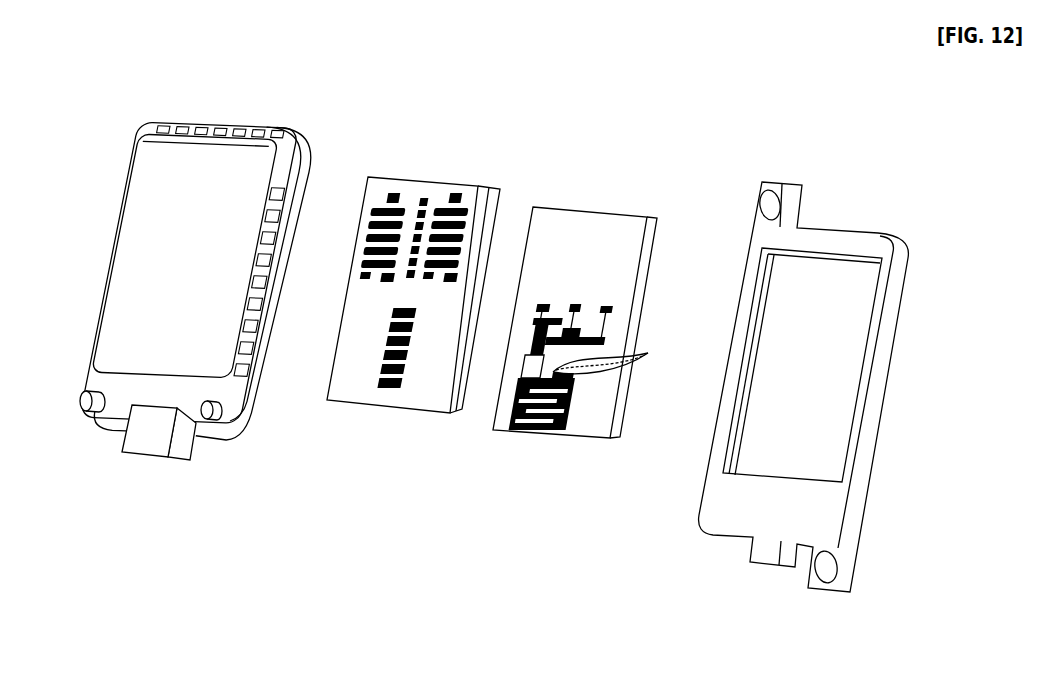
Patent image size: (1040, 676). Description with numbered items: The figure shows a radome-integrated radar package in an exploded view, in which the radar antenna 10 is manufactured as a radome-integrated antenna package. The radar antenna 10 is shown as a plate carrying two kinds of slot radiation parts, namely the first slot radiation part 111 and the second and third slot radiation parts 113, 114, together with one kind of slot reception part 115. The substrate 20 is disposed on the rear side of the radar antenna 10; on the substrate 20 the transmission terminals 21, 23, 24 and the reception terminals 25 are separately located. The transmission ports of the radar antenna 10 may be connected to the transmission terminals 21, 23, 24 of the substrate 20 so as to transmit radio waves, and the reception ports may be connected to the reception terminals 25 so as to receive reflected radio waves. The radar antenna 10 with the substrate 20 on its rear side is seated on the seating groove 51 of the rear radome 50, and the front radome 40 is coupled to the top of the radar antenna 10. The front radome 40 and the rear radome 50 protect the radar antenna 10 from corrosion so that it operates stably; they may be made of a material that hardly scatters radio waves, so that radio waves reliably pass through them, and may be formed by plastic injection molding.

The radar antenna 10 is at (477, 190).
The first slot radiation part 111 is at (425, 196).
The second slot radiation part 113 is at (389, 192).
The third slot radiation part 114 is at (455, 193).
The slot reception part 115 is at (386, 393).
The substrate 20 is at (649, 215).
The transmission terminal 21 is at (576, 303).
The transmission terminal 23 is at (543, 303).
The transmission terminal 24 is at (607, 306).
The reception terminals 25 is at (591, 379).
The front radome 40 is at (251, 127).
The rear radome 50 is at (822, 240).
The seating groove 51 is at (830, 343).